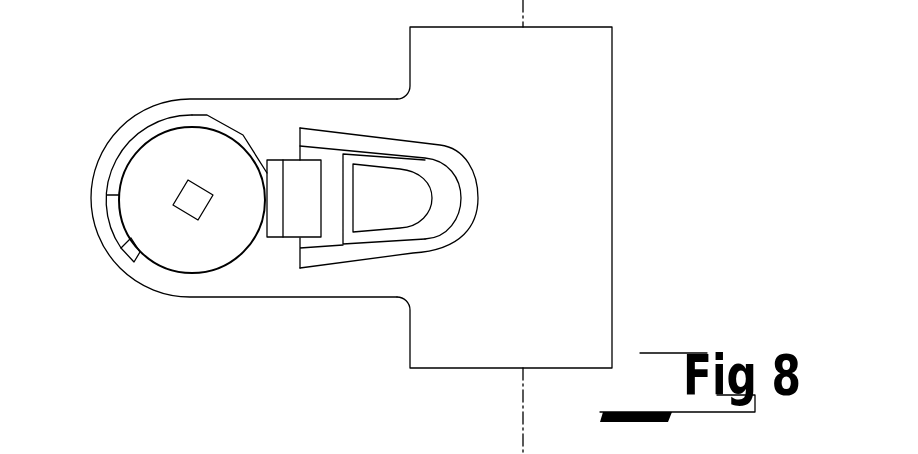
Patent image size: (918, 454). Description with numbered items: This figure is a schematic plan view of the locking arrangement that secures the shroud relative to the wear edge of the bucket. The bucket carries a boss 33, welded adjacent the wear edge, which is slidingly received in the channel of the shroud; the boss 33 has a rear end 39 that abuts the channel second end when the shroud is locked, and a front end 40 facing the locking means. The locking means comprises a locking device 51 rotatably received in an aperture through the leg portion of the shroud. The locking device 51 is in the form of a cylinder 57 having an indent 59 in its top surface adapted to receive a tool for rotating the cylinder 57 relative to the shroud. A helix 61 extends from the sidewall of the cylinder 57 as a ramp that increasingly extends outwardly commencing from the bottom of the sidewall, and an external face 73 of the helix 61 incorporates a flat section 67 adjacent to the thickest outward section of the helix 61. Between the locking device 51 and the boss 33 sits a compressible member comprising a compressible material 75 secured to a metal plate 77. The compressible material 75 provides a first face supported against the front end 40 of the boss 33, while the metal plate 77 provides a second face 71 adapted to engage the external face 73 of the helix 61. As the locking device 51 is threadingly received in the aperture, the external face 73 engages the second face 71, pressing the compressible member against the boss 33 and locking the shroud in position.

The boss 33 is at (463, 173).
The rear end 39 is at (480, 213).
The front end 40 is at (321, 180).
The locking device 51 is at (137, 213).
The cylinder 57 is at (150, 230).
The indent 59 is at (185, 188).
The helix 61 is at (128, 148).
The flat section 67 is at (220, 124).
The second face 71 is at (268, 175).
The external face 73 is at (108, 165).
The compressible material 75 is at (305, 225).
The metal plate 77 is at (276, 228).